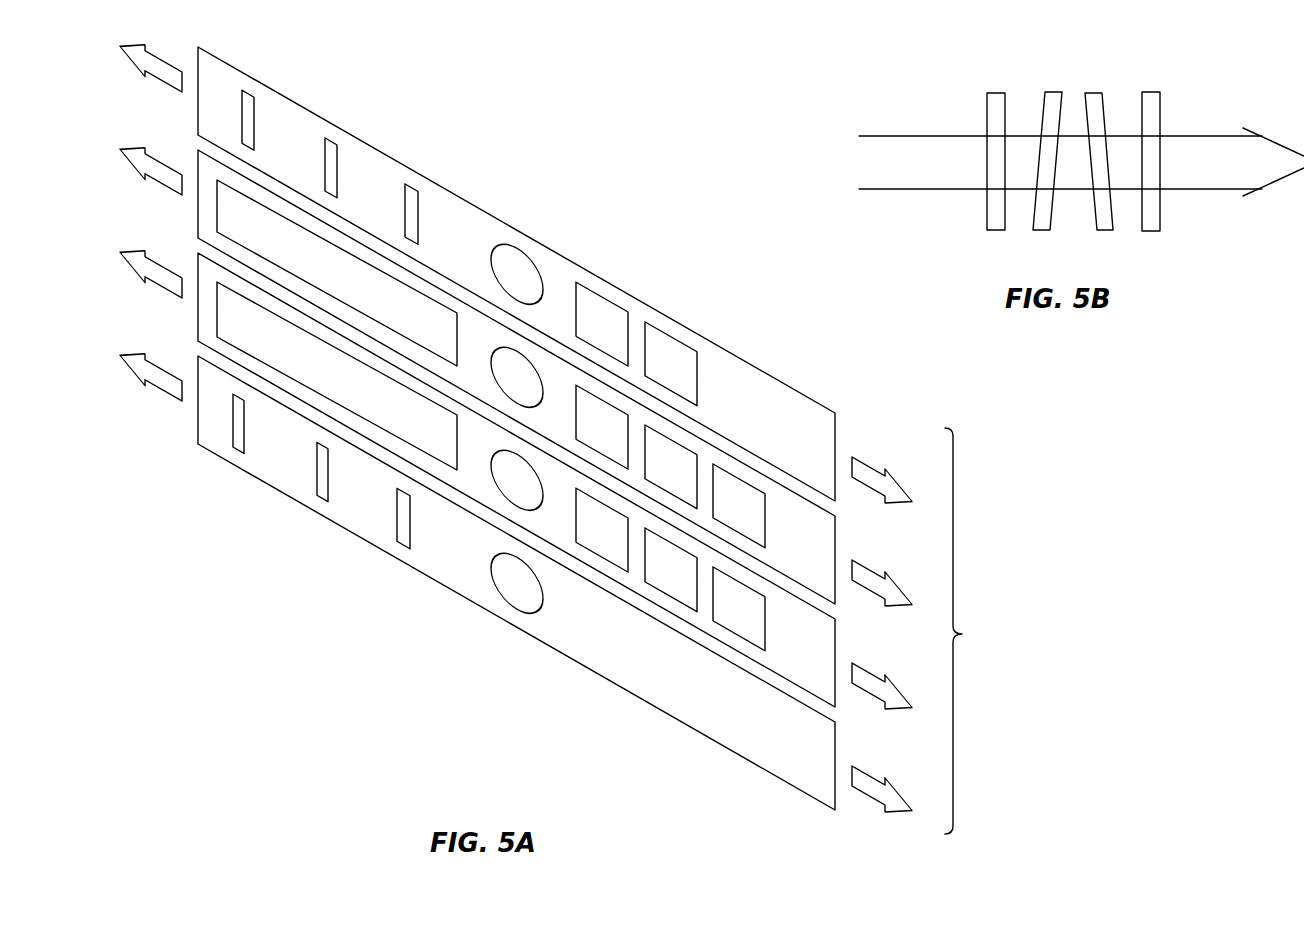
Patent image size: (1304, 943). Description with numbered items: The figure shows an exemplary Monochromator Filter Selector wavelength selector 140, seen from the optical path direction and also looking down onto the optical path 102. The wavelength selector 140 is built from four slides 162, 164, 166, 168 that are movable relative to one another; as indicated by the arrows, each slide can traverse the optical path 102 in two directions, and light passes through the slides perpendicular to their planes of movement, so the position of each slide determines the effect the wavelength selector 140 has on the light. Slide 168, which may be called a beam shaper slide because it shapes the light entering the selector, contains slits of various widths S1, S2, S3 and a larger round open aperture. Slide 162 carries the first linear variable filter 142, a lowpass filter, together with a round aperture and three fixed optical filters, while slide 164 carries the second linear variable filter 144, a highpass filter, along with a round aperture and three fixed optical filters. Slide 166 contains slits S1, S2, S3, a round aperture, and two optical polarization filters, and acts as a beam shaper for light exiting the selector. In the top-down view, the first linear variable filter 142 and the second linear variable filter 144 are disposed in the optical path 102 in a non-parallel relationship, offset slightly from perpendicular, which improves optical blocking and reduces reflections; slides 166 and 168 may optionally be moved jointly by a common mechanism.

In FIG. 5B, the optical path 102 is at (888, 135).
In FIG. 5A, the wavelength selector 140 is at (980, 631).
In FIG. 5A, the LVF1 142 is at (337, 376).
In FIG. 5A, the LVF2 144 is at (337, 273).
In FIG. 5A, the slide 162 is at (552, 480).
In FIG. 5B, the slide 162 is at (1052, 92).
In FIG. 5A, the slide 164 is at (552, 377).
In FIG. 5B, the slide 164 is at (1097, 93).
In FIG. 5A, the slide 166 is at (835, 422).
In FIG. 5B, the slide 166 is at (1150, 92).
In FIG. 5A, the slide 168 is at (835, 731).
In FIG. 5B, the slide 168 is at (996, 92).
In FIG. 5A, the slit S1 is at (247, 90).
In FIG. 5A, the slit S2 is at (330, 138).
In FIG. 5A, the slit S3 is at (412, 185).